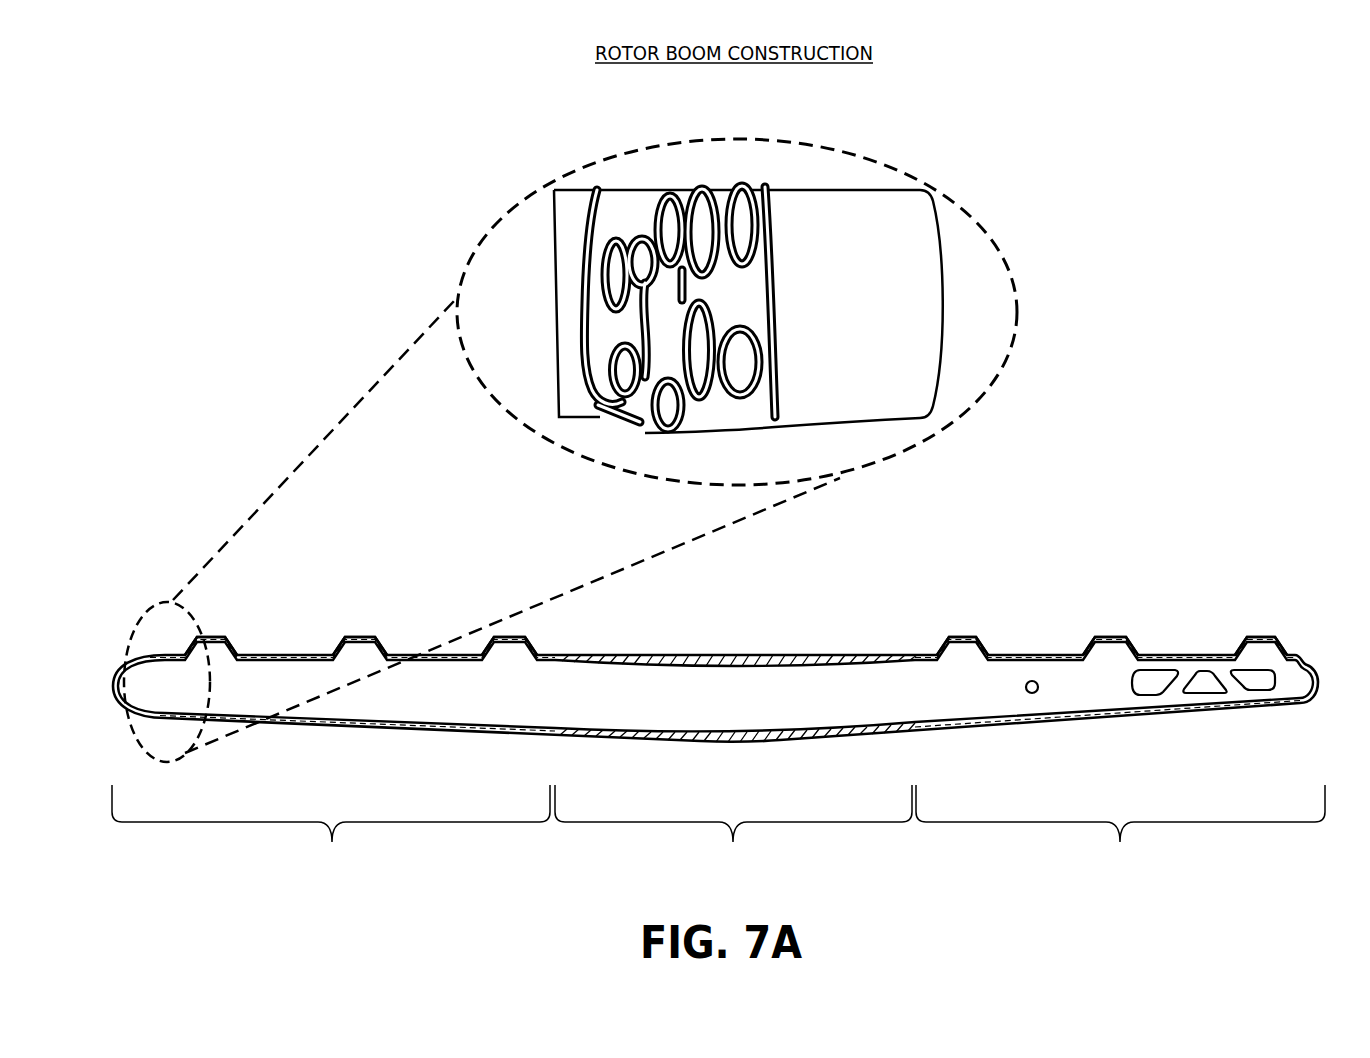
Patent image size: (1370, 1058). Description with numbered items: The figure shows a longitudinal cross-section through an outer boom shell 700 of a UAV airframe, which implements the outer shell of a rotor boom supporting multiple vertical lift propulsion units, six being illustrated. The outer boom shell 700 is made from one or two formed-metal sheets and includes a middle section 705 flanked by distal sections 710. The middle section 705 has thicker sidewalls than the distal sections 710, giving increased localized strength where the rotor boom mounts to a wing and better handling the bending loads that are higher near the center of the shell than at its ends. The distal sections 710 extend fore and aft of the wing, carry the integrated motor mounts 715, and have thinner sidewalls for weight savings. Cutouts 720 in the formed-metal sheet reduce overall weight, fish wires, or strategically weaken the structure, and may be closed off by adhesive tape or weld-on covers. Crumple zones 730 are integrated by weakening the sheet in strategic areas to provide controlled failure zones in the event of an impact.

The outer boom shell 700 is at (1103, 527).
The middle section 705 is at (736, 761).
The distal sections 710 is at (718, 826).
The integrated motor mounts 715 is at (1263, 634).
The cutouts 720 is at (1263, 690).
The crumple zones 730 is at (798, 179).